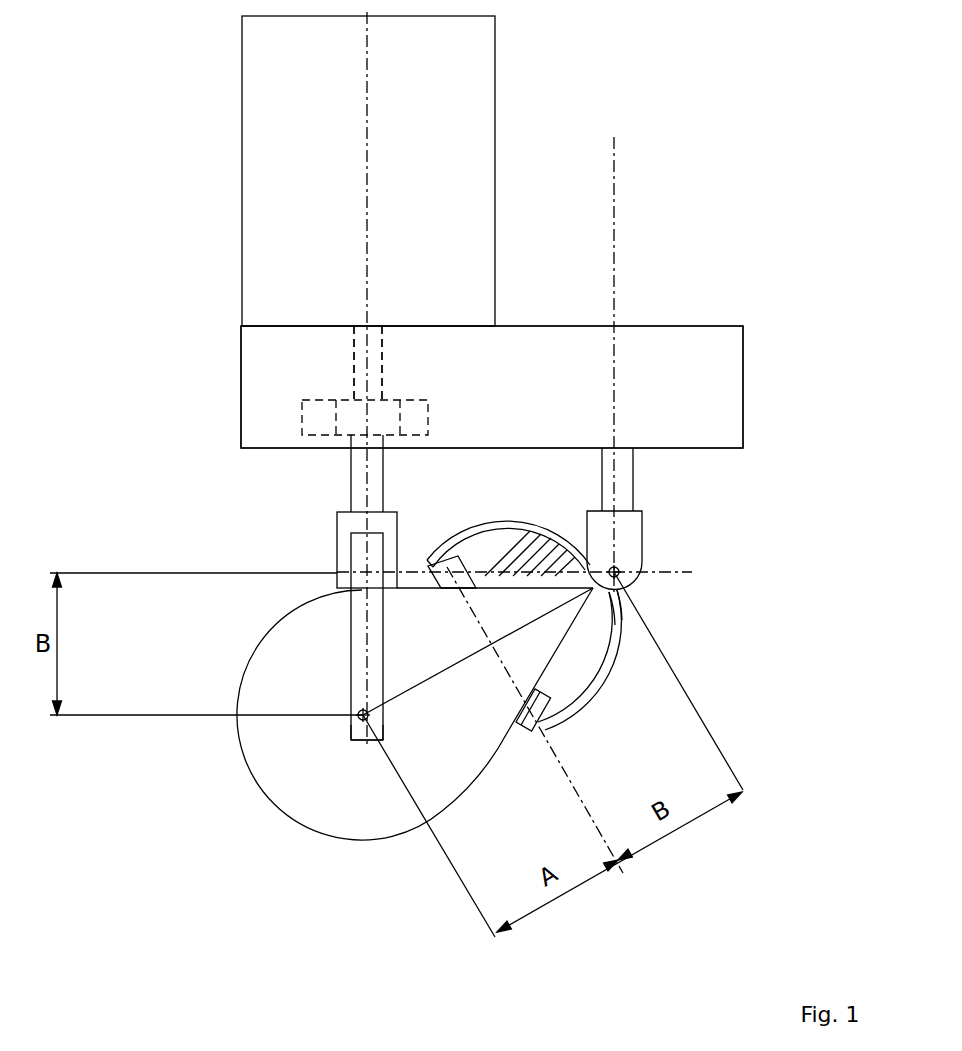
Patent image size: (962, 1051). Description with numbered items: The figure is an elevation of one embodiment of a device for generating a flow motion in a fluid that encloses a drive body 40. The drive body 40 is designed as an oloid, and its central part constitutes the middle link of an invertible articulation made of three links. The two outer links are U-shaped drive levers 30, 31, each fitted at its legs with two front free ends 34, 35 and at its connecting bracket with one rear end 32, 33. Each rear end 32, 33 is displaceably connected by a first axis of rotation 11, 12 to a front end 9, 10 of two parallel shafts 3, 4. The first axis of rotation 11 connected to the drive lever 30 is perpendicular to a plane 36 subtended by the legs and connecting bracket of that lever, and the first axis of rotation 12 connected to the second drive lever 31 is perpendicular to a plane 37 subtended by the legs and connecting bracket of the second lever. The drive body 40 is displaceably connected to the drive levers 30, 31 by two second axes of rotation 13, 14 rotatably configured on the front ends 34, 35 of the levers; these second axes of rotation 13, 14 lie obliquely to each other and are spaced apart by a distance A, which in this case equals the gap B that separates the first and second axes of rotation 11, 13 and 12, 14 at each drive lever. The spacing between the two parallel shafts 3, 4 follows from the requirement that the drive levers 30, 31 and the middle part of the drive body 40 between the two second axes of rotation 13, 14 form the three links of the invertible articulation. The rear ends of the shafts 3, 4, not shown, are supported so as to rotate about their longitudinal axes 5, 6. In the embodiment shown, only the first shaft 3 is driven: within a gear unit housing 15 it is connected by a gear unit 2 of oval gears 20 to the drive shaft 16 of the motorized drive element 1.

The motorized drive element 1 is at (224, 174).
The gear unit 2 is at (216, 406).
The first shaft 3 is at (356, 487).
The second shaft 4 is at (622, 485).
The longitudinal axis 5 is at (366, 365).
The longitudinal axis 6 is at (616, 350).
The front end of shaft 9 is at (347, 580).
The front end of shaft 10 is at (623, 578).
The first axis of rotation 11 is at (337, 572).
The first axis of rotation 12 is at (618, 570).
The second axis of rotation 13 is at (362, 717).
The second axis of rotation 14 is at (557, 757).
The gear unit housing 15 is at (698, 395).
The drive shaft 16 is at (358, 380).
The oval gears 20 is at (415, 418).
The drive lever 30 is at (360, 650).
The second drive lever 31 is at (610, 680).
The rear end 32 is at (363, 547).
The rear end 33 is at (623, 583).
The front free end 34 is at (360, 732).
The front free end 35 is at (532, 740).
The plane 36 is at (367, 745).
The plane 37 is at (535, 553).
The drive body 40 is at (380, 810).